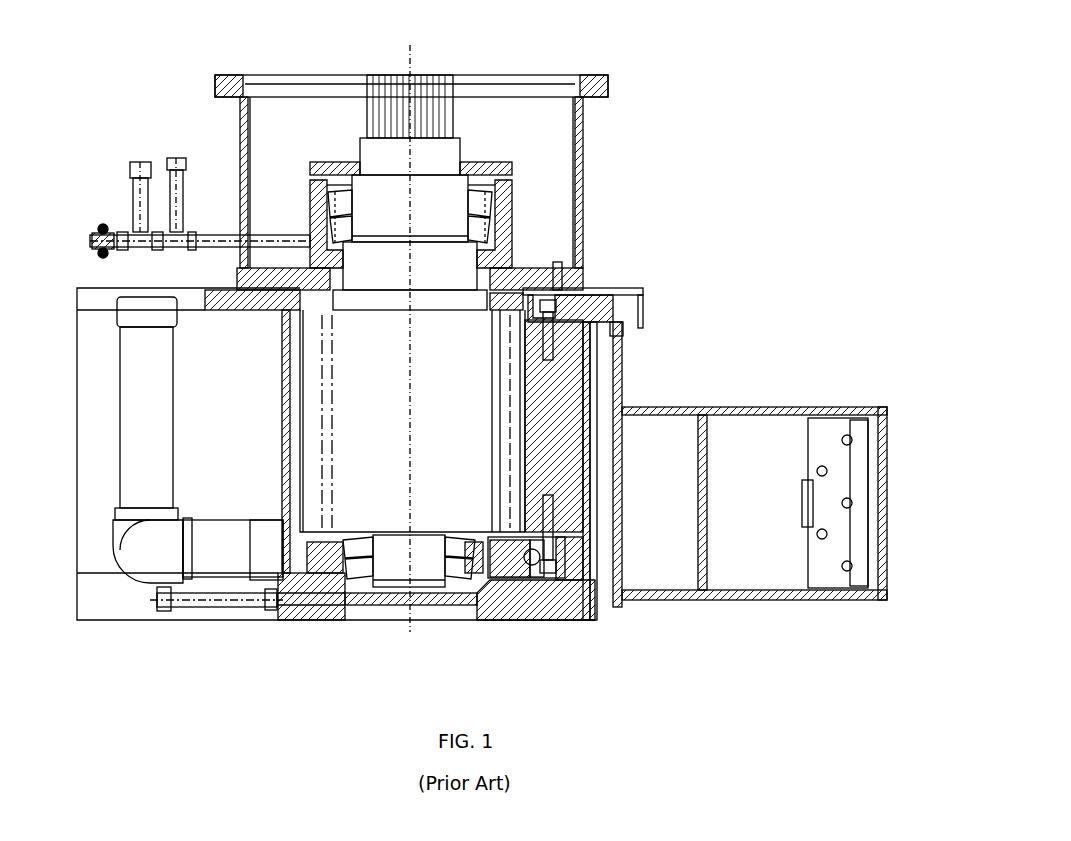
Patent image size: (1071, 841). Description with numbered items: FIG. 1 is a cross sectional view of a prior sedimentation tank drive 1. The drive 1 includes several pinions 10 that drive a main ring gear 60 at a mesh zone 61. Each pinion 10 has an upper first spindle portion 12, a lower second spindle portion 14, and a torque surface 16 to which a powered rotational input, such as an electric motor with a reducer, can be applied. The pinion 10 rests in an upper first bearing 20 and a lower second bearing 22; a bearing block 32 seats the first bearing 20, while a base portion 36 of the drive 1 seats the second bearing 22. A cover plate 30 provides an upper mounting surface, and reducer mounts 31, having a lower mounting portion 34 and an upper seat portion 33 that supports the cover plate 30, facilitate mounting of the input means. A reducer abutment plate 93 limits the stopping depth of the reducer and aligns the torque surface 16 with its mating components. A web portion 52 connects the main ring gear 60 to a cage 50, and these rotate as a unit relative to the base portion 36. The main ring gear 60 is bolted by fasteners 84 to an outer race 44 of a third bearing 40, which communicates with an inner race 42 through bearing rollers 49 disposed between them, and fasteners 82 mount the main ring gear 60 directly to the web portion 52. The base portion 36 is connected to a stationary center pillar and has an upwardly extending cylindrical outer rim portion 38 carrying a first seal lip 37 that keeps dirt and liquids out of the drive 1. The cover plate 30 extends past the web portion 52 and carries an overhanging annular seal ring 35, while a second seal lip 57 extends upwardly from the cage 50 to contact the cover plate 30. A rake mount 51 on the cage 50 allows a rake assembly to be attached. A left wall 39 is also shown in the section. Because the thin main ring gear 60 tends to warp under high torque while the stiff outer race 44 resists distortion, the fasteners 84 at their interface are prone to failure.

The sedimentation tank drive 1 is at (704, 76).
The pinion 10 is at (412, 421).
The upper first spindle portion 12 is at (386, 210).
The lower second spindle portion 14 is at (398, 570).
The torque surface 16 is at (406, 97).
The upper first bearing 20 is at (483, 200).
The lower second bearing 22 is at (365, 552).
The cover plate 30 is at (222, 292).
The reducer mounts 31 is at (212, 78).
The bearing block 32 is at (512, 208).
The upper seat portion 33 is at (262, 314).
The lower mounting portion 34 is at (284, 280).
The overhanging annular seal ring 35 is at (645, 320).
The base portion 36 is at (568, 602).
The first seal lip 37 is at (606, 331).
The cylindrical outer rim portion 38 is at (592, 437).
The left wall 39 is at (281, 470).
The third bearing 40 is at (488, 535).
The inner race 42 is at (496, 582).
The outer race 44 is at (560, 550).
The bearing rollers 49 is at (530, 562).
The cage 50 is at (661, 590).
The rake mount 51 is at (826, 548).
The web portion 52 is at (590, 305).
The second seal lip 57 is at (646, 300).
The main ring gear 60 is at (554, 426).
The mesh zone 61 is at (506, 428).
The fasteners 82 is at (545, 338).
The fasteners 84 is at (546, 512).
The reducer abutment plate 93 is at (513, 166).